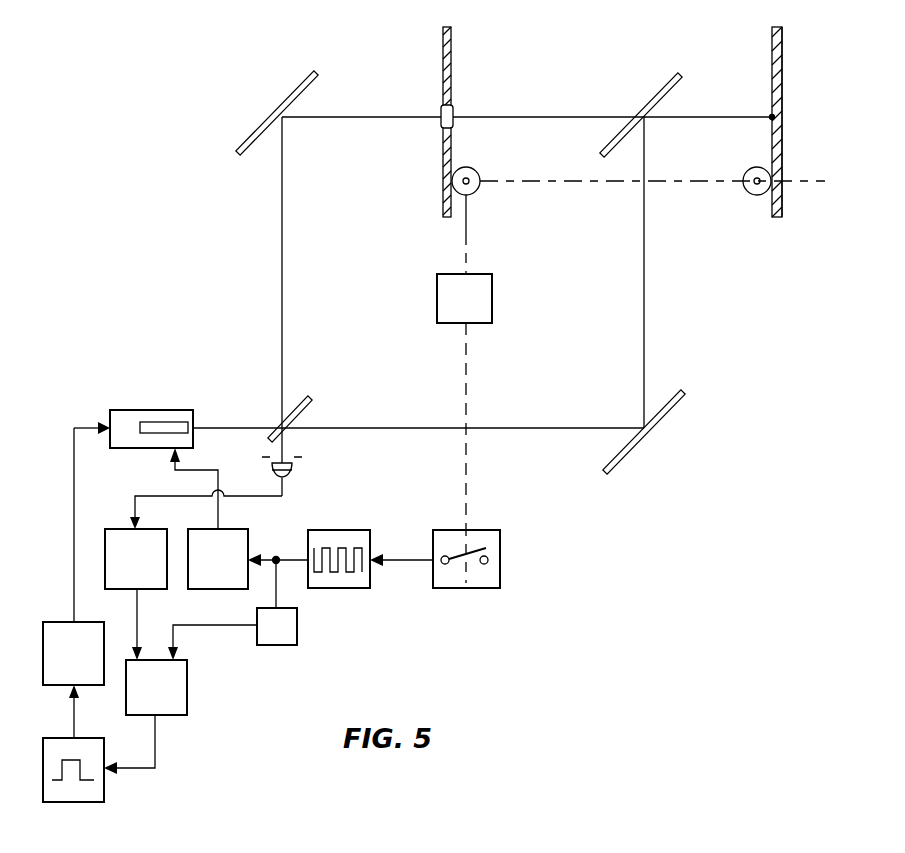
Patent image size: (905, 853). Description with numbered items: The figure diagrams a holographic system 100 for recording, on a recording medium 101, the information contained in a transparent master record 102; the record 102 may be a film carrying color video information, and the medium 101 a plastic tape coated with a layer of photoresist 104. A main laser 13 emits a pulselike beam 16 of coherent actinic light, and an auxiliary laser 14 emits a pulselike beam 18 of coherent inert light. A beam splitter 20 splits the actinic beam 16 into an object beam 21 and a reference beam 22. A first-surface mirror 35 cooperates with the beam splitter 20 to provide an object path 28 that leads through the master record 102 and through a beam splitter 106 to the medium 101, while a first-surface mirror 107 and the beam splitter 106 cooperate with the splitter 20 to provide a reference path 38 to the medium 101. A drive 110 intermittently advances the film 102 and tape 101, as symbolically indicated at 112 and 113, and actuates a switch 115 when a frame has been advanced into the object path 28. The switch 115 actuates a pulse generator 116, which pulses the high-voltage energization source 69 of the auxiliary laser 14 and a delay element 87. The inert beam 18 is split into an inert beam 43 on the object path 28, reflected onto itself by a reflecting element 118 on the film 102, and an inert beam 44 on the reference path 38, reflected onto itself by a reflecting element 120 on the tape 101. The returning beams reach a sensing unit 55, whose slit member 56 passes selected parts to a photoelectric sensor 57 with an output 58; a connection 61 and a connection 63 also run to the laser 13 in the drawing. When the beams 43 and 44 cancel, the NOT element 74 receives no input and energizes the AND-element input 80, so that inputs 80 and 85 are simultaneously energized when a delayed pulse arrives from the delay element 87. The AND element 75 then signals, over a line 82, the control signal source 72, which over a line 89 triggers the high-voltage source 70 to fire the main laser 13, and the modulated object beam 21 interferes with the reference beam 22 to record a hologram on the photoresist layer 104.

The main laser 13 is at (176, 410).
The auxiliary laser 14 is at (178, 422).
The actinic light beam 16 is at (259, 428).
The inert light beam 18 is at (232, 414).
The beam splitter 20 is at (310, 401).
The object beam 21 is at (282, 356).
The reference beam 22 is at (565, 428).
The object path 28 is at (400, 107).
The first-surface mirror 35 is at (296, 95).
The reference path 38 is at (378, 424).
The inert beam 43 is at (279, 295).
The inert beam 44 is at (493, 428).
The sensing unit 55 is at (310, 465).
The aperture or slit member 56 is at (295, 458).
The photoelectric sensor 57 is at (292, 480).
The output 58 is at (252, 486).
The laser supply line 61 is at (192, 458).
The laser supply line 63 is at (74, 548).
The high-voltage energization source 69 is at (248, 530).
The high-voltage energization source 70 is at (47, 624).
The control signal source 72 is at (48, 774).
The logical NOT element 74 is at (140, 529).
The logical AND element 75 is at (188, 701).
The AND-element input 80 is at (139, 607).
The AND gate output line 82 is at (155, 756).
The AND-element input 85 is at (178, 631).
The delay element 87 is at (297, 640).
The pulse generator output line 89 is at (52, 738).
The holographic system 100 is at (380, 262).
The recording medium 101 is at (782, 82).
The transparent master record 102 is at (452, 60).
The layer of photoresist 104 is at (770, 47).
The beam splitter 106 is at (670, 80).
The first-surface mirror 107 is at (686, 406).
The drive 110 is at (492, 292).
The intermittent advancement of master record 112 is at (474, 172).
The intermittent advancement of recording medium 113 is at (752, 195).
The switch 115 is at (500, 560).
The pulse generator 116 is at (350, 588).
The reflecting element 118 is at (439, 124).
The reflecting element 120 is at (770, 117).